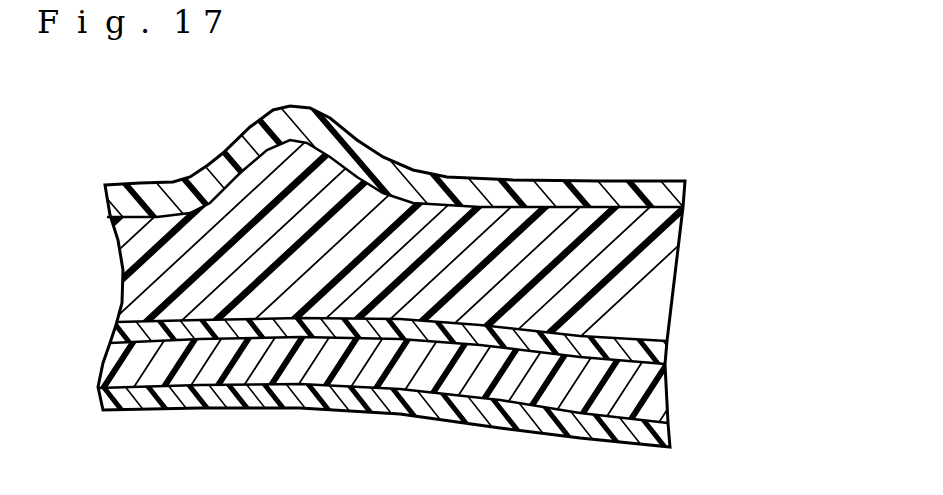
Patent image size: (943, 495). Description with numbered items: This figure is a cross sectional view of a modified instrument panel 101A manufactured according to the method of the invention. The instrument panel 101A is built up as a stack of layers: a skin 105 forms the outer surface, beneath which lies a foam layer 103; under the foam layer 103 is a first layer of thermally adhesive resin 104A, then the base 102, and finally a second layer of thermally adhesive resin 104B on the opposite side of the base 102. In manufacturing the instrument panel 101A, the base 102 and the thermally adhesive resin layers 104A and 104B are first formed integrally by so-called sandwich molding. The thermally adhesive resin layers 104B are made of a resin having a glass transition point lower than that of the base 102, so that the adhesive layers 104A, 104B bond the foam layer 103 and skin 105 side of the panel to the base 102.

The instrument panel 101A is at (578, 161).
The skin 105 is at (683, 197).
The foam layer 103 is at (675, 272).
The first layer of thermally adhesive resin 104A is at (650, 352).
The base 102 is at (658, 396).
The second layer of thermally adhesive resin 104B is at (660, 433).